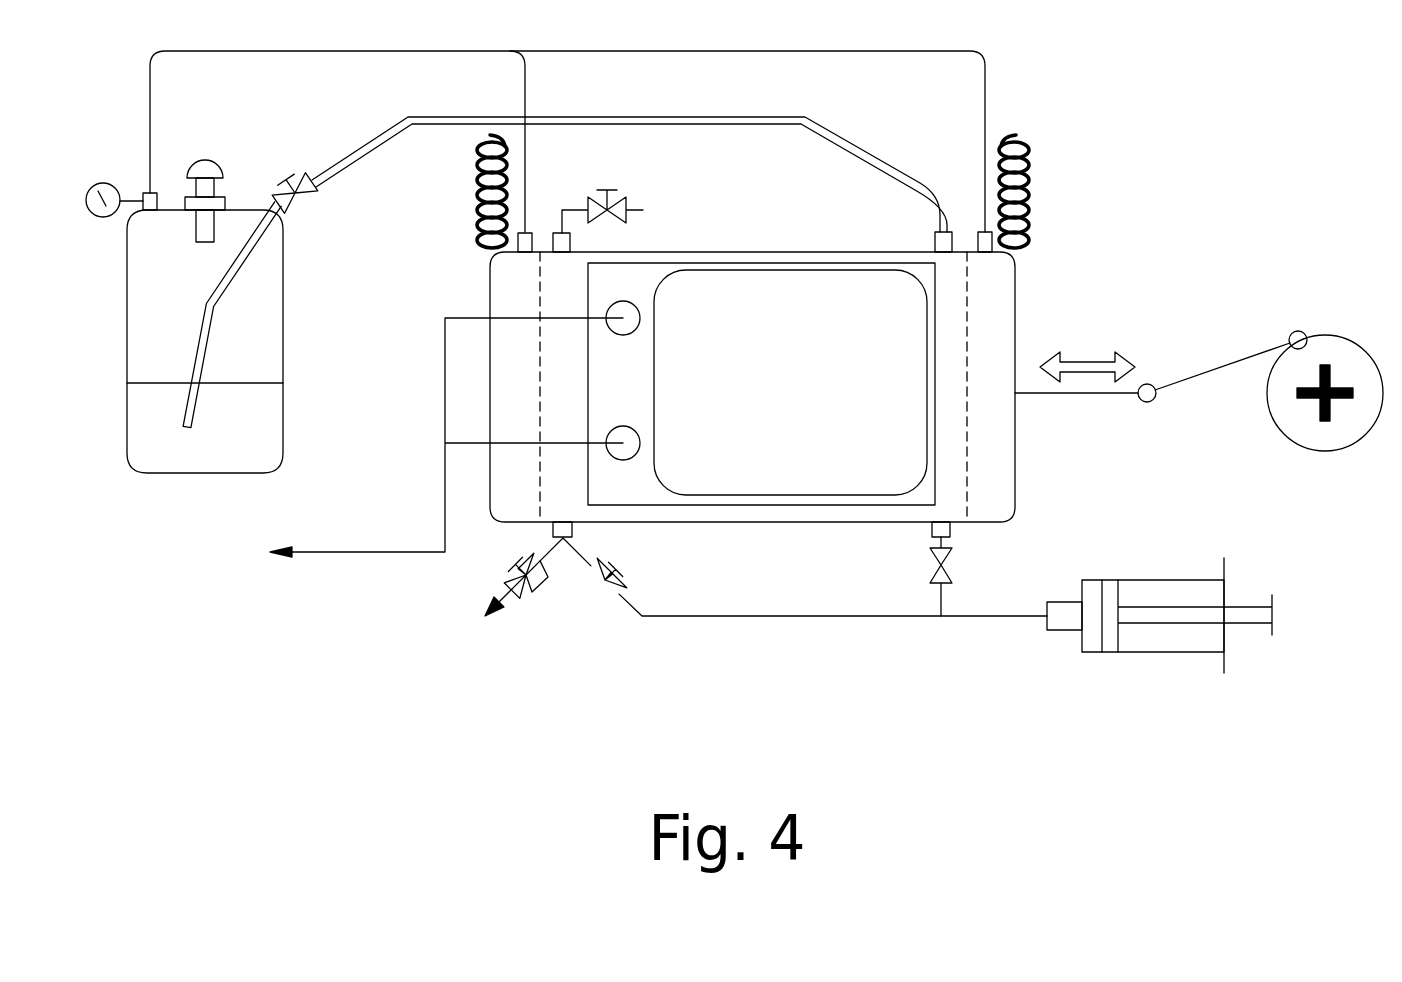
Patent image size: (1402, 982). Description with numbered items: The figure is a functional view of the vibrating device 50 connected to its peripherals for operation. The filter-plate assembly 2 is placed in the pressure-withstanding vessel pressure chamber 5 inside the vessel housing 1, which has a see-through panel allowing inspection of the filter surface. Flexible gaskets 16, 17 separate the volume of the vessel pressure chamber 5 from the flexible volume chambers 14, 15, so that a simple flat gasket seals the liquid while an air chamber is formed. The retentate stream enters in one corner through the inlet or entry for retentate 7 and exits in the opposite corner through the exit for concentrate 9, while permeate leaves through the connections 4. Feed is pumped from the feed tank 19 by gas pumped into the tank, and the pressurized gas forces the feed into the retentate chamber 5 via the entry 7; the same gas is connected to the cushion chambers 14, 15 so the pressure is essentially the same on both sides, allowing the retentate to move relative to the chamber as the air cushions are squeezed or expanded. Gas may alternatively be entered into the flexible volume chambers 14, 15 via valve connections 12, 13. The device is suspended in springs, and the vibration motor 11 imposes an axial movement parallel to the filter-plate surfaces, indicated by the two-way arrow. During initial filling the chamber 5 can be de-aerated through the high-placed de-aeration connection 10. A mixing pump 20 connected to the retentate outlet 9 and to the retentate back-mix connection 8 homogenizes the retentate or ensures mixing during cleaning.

The vessel housing 1 is at (1015, 285).
The filter-plate assembly 2 is at (627, 280).
The connections 4 is at (606, 440).
The vessel pressure chamber 5 is at (950, 337).
The inlet or entry for retentate 7 is at (940, 231).
The retentate back-mix connection 8 is at (932, 532).
The exit for concentrate 9 is at (563, 540).
The de-aeration connection 10 is at (558, 231).
The vibration motor 11 is at (1383, 393).
The valve connection 12 is at (988, 231).
The valve connection 13 is at (515, 238).
The flexible volume chamber 14 is at (995, 472).
The flexible volume chamber 15 is at (510, 287).
The flexible gasket 16 is at (538, 293).
The flexible gasket 17 is at (967, 483).
The feed tank 19 is at (270, 300).
The mixing pump 20 is at (1113, 590).
The vibrating device 50 is at (808, 252).